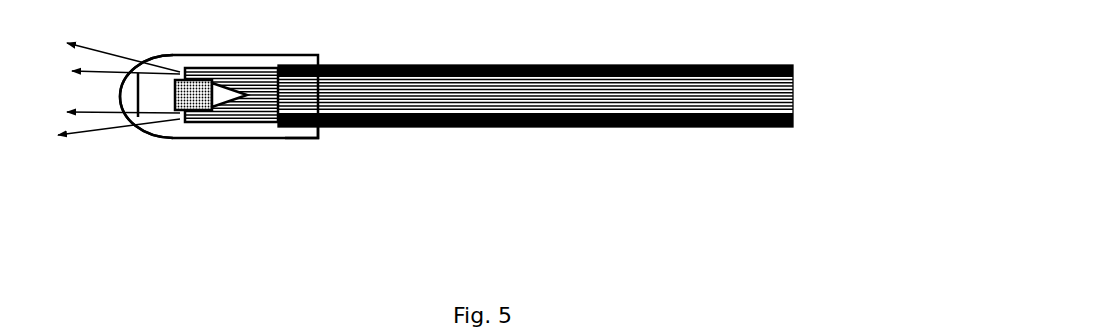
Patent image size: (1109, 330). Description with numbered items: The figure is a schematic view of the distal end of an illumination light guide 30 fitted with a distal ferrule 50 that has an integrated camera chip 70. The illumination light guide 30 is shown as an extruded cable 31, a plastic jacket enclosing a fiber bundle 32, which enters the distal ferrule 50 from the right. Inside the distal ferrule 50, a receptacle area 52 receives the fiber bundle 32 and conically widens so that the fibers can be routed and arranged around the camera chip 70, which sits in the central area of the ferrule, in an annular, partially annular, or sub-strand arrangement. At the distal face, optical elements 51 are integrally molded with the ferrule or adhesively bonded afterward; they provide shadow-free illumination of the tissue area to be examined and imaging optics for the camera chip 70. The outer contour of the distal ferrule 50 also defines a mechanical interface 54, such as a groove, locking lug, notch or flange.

The illumination light guide 30 is at (573, 126).
The extruded cable 31 is at (472, 125).
The fiber bundle 32 is at (357, 102).
The distal ferrule 50 is at (268, 138).
The optical elements 51 is at (128, 100).
The receptacle area 52 is at (248, 117).
The mechanical interface 54 is at (293, 138).
The camera chip 70 is at (202, 106).